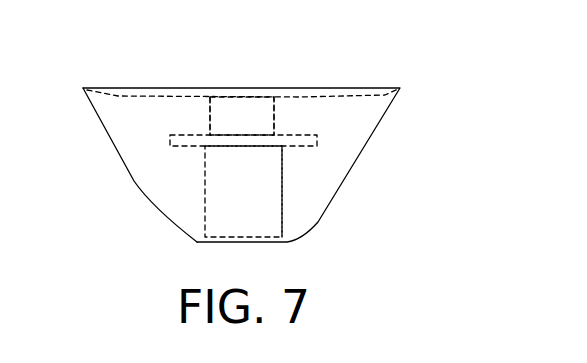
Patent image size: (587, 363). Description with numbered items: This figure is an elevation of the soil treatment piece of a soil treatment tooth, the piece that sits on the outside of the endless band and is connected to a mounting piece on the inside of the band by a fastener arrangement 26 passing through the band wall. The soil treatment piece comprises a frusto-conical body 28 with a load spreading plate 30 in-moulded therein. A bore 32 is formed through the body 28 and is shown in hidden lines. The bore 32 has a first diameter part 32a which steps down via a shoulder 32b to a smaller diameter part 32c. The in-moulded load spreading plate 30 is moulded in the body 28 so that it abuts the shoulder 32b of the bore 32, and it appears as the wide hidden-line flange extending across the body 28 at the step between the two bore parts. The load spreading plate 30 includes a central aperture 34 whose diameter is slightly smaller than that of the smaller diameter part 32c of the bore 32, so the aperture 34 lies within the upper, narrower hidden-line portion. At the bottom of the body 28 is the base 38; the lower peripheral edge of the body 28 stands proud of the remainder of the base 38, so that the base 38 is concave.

The fastener arrangement 26 is at (400, 88).
The frusto-conical body 28 is at (133, 177).
The load spreading plate 30 is at (316, 140).
The bore 32 is at (282, 228).
The first diameter part 32a is at (283, 192).
The shoulder 32b is at (283, 133).
The smaller diameter part 32c is at (210, 108).
The central aperture 34 is at (218, 137).
The base 38 is at (357, 95).